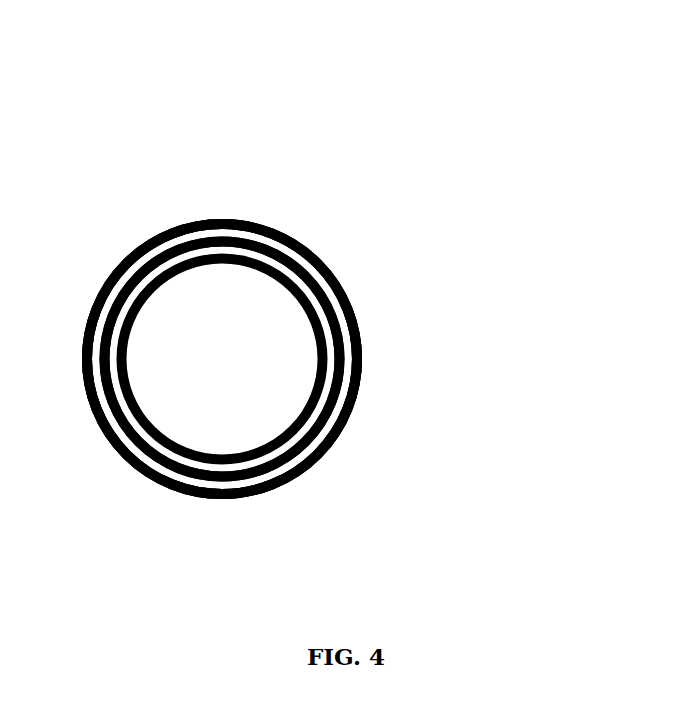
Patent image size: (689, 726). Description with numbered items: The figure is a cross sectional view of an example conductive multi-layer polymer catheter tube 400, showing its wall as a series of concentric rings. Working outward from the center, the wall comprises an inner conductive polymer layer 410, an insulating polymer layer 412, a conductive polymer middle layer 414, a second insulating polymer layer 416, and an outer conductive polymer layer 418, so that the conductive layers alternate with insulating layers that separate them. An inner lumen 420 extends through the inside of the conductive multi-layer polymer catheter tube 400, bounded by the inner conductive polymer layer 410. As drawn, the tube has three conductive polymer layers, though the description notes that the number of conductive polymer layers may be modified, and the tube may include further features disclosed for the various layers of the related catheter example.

The conductive multi-layer polymer catheter tube 400 is at (132, 250).
The inner conductive polymer layer 410 is at (328, 388).
The insulating polymer layer 412 is at (337, 332).
The conductive polymer middle layer 414 is at (332, 285).
The second insulating polymer layer 416 is at (303, 247).
The outer conductive polymer layer 418 is at (255, 222).
The inner lumen 420 is at (278, 387).